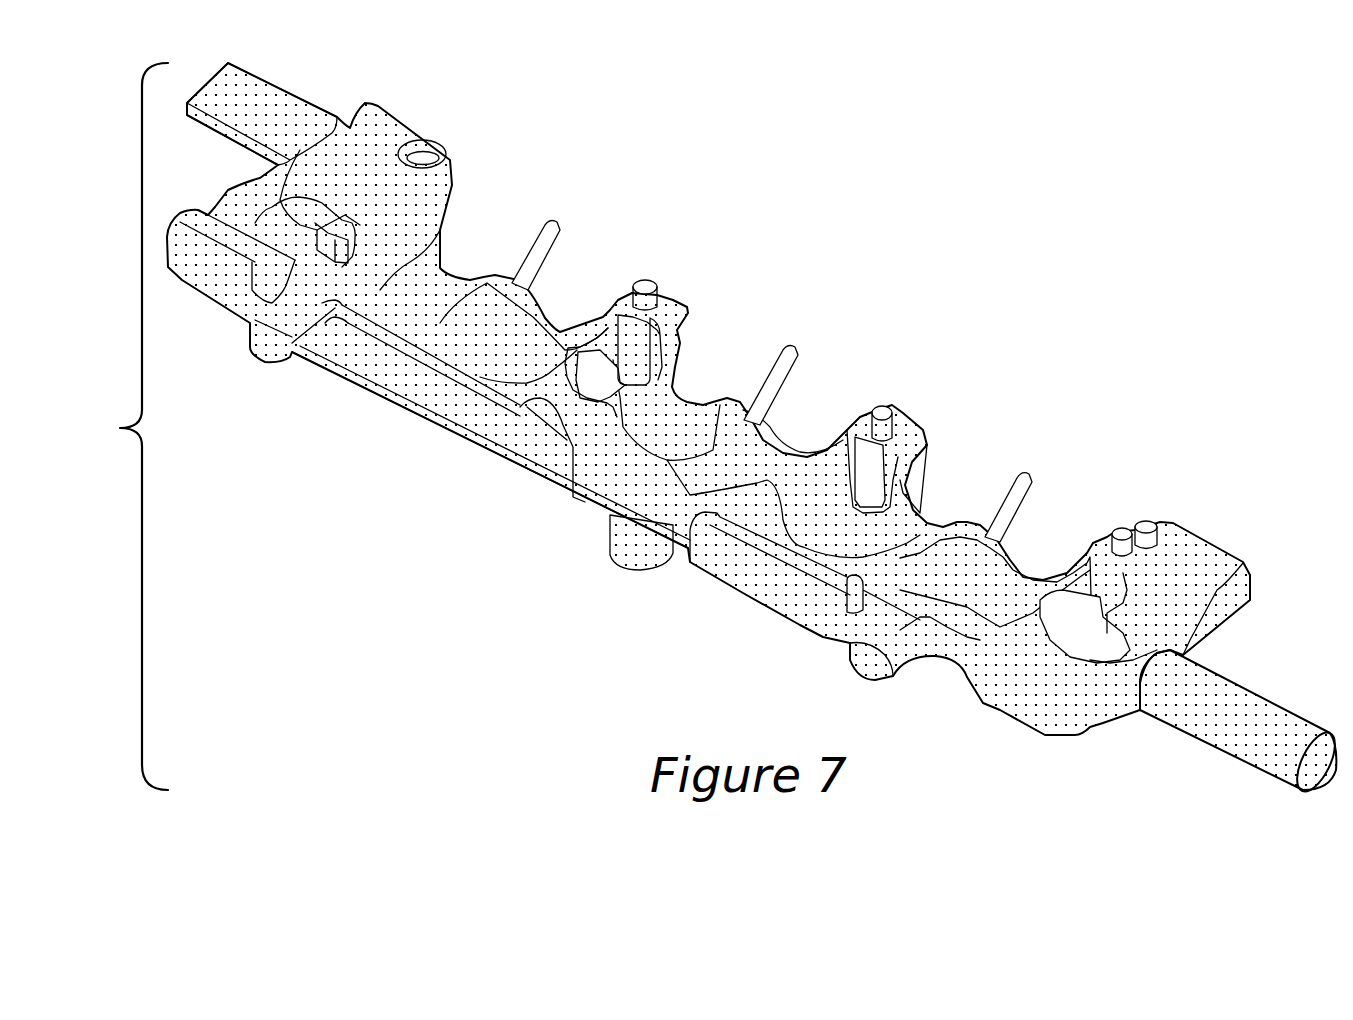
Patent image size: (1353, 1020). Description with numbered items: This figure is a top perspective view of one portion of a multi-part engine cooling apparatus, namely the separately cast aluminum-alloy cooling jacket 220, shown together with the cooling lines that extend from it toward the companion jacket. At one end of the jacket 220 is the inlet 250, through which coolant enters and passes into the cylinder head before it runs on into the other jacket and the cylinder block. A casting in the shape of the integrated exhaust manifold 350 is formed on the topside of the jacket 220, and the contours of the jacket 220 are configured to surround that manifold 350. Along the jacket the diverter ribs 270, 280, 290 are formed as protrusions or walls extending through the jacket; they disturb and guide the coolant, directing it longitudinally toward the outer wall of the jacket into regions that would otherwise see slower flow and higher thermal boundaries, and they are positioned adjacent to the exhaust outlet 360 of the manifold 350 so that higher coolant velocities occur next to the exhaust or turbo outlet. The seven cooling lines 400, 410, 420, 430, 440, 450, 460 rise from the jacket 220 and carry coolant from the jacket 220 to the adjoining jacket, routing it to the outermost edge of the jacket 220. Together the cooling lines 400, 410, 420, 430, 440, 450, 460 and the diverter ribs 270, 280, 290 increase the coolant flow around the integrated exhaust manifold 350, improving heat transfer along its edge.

The cooling jacket 220 is at (114, 426).
The inlet 250 is at (363, 240).
The diverter rib 270 is at (755, 430).
The diverter rib 280 is at (535, 425).
The diverter rib 290 is at (770, 505).
The integrated exhaust manifold 350 is at (438, 305).
The exhaust outlet 360 is at (633, 527).
The cooling line 400 is at (552, 223).
The cooling line 410 is at (650, 281).
The cooling line 420 is at (788, 350).
The cooling line 430 is at (892, 405).
The cooling line 440 is at (1023, 473).
The cooling line 450 is at (1122, 528).
The cooling line 460 is at (1148, 522).